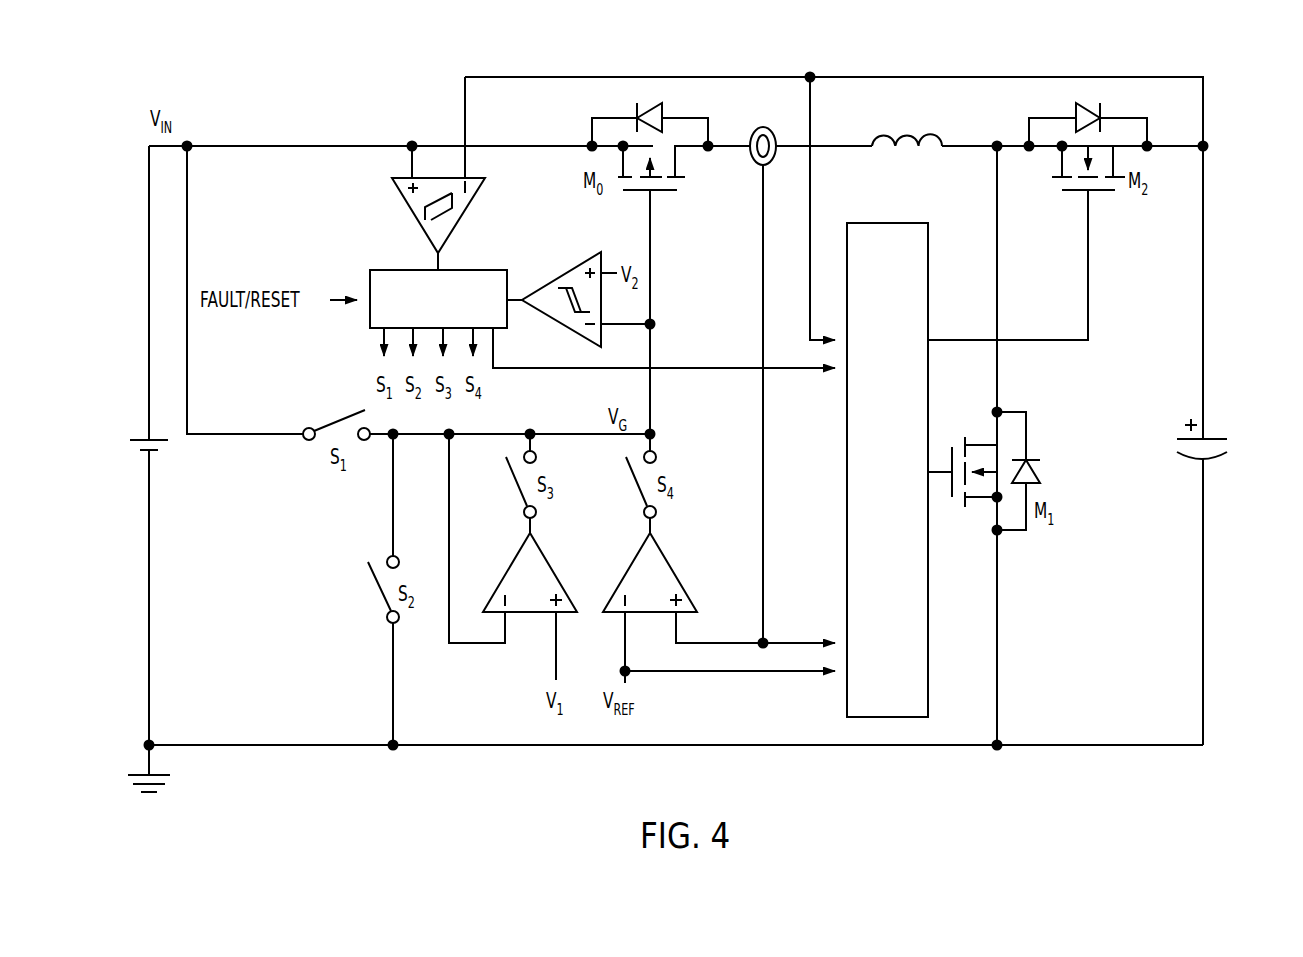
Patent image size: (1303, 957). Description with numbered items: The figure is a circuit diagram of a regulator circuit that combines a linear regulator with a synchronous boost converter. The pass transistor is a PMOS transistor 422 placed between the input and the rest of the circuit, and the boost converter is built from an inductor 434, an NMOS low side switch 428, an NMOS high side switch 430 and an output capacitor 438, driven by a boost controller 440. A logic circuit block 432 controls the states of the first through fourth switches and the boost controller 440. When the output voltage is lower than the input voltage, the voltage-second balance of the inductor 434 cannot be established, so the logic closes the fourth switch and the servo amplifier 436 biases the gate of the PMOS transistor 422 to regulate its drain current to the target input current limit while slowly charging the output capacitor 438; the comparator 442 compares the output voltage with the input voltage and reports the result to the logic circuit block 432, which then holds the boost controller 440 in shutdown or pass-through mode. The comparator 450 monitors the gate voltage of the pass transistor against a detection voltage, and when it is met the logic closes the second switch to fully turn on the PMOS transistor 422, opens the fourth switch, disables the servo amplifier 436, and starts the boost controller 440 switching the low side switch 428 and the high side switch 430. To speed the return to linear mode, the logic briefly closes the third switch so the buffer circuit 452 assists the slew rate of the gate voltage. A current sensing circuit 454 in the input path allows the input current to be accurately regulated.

The PMOS transistor 422 is at (615, 118).
The current sensing circuit 454 is at (752, 154).
The comparator 442 is at (467, 216).
The logic circuit block 432 is at (405, 270).
The comparator 450 is at (563, 272).
The boost controller 440 is at (888, 223).
The inductor 434 is at (908, 134).
The NMOS high side switch 430 is at (1125, 118).
The NMOS low side switch 428 is at (1027, 434).
The output capacitor 438 is at (1218, 438).
The buffer circuit 452 is at (556, 573).
The servo amplifier 436 is at (676, 573).